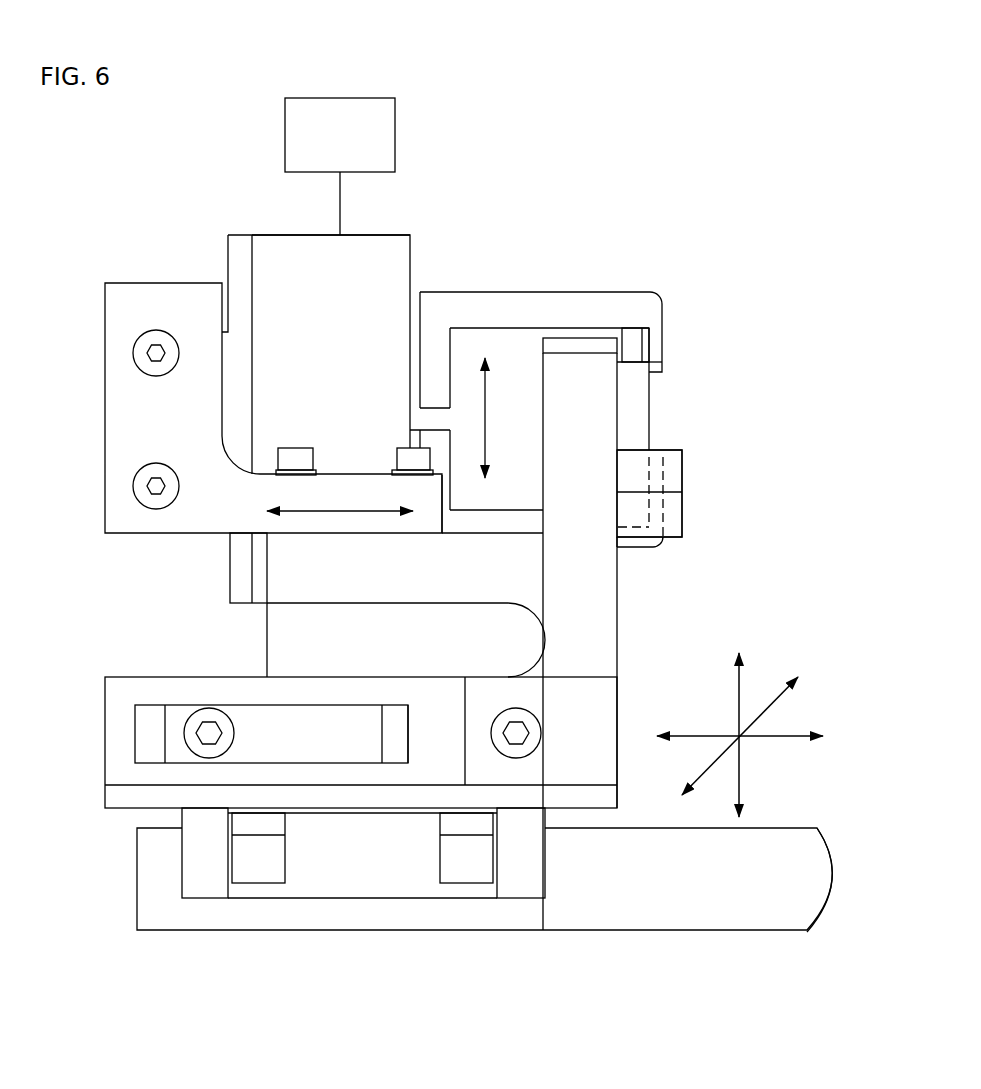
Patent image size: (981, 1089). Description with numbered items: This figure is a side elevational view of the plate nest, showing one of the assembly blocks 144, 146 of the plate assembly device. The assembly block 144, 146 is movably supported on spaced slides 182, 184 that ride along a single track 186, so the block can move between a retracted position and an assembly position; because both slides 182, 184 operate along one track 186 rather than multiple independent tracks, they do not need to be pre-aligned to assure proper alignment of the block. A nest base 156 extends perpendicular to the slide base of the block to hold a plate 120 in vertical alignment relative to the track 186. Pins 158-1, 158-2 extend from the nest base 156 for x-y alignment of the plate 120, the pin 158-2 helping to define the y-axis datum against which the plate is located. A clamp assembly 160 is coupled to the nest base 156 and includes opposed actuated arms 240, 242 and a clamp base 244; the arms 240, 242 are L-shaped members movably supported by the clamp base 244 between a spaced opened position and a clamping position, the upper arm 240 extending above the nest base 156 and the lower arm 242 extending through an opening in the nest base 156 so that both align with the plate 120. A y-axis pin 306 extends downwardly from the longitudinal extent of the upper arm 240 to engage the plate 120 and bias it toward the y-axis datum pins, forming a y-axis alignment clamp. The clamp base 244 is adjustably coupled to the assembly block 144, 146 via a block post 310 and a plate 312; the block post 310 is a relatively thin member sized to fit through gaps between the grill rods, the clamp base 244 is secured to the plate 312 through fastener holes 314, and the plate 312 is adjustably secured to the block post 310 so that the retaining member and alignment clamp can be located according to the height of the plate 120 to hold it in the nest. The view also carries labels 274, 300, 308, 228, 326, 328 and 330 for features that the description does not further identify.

The assembly block 144 is at (429, 543).
The assembly block 146 is at (553, 263).
The actuator 274 is at (352, 93).
The clamp assembly 160 is at (228, 267).
The actuated arm 240 is at (472, 300).
The clamp base 244 is at (346, 366).
The plate 312 is at (122, 423).
The fastener holes 314 is at (134, 340).
The y-axis pin 306 is at (630, 340).
The retainer 308 is at (660, 367).
The plate 120 is at (635, 413).
The clamp block 300 is at (655, 465).
The pin 158-1 is at (683, 472).
The pin 158-2 is at (683, 518).
The actuated arm 242 is at (635, 543).
The block post 310 is at (283, 637).
The nest base 156 is at (583, 633).
The base block 228 is at (115, 718).
The slot 330 is at (153, 742).
The bolts 326 is at (200, 747).
The base surface 328 is at (443, 740).
The slide 182 is at (484, 869).
The slide 184 is at (527, 878).
The track 186 is at (827, 887).